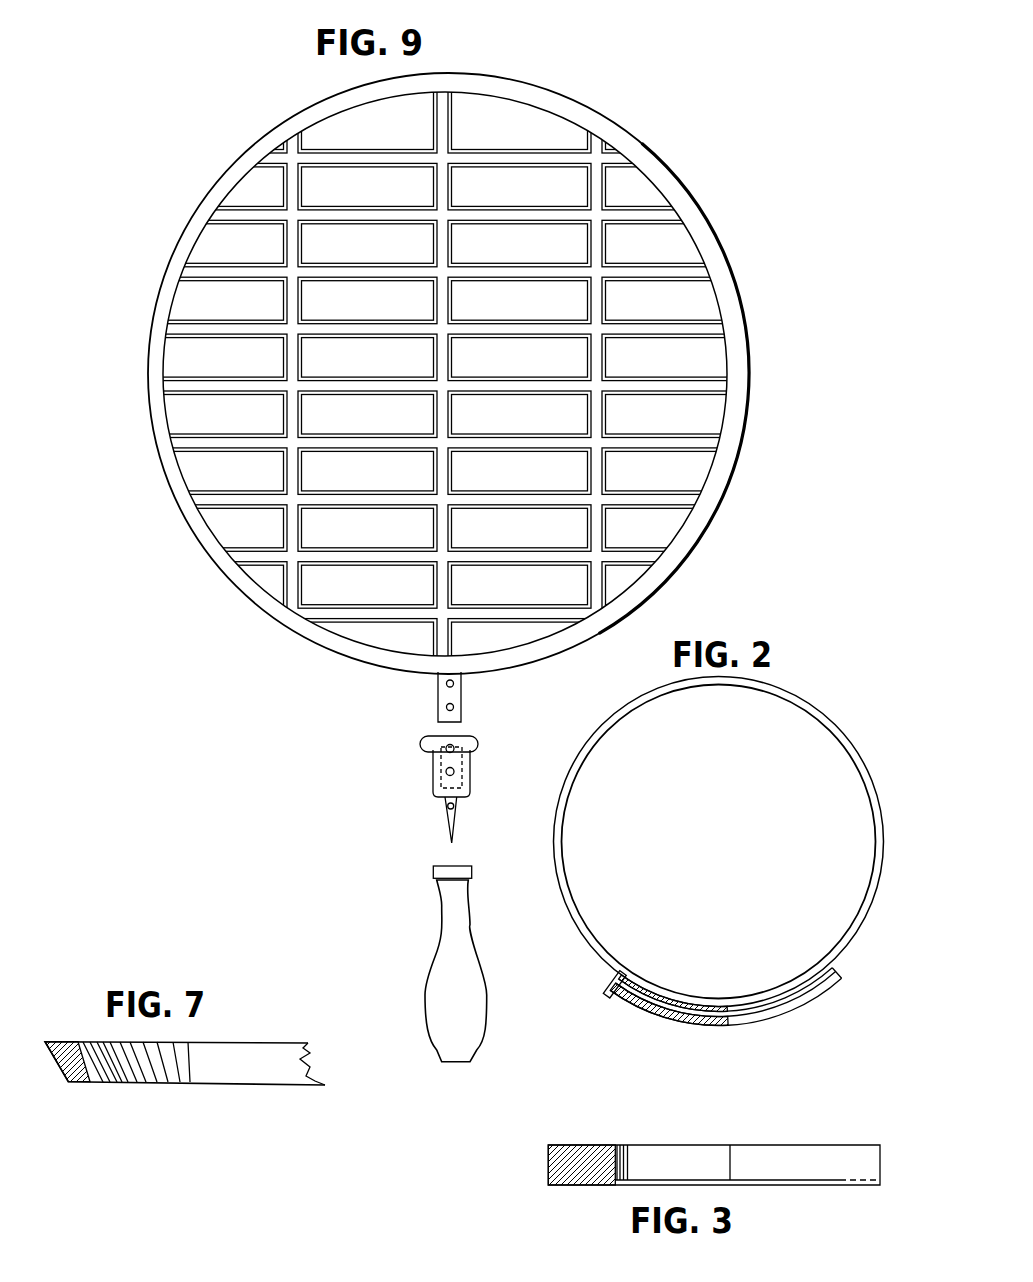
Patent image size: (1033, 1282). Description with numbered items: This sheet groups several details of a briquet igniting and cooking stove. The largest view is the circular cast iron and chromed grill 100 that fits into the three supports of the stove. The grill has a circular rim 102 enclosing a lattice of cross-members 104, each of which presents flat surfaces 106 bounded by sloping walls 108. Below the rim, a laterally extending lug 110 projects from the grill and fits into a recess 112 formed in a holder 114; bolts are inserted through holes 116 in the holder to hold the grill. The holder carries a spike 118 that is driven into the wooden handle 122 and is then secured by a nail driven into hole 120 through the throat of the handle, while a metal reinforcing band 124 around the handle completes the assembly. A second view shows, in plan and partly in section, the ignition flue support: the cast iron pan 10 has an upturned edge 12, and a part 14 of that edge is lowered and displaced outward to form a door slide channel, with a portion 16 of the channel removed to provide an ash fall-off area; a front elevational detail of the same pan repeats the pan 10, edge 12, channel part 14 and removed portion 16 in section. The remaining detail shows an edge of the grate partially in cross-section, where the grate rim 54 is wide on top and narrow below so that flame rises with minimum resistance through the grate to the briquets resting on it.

In FIG. 9, the grill 100 is at (783, 383).
In FIG. 9, the circular rim 102 is at (725, 453).
In FIG. 9, the cross-members 104 is at (606, 410).
In FIG. 9, the flat surfaces 106 is at (667, 440).
In FIG. 9, the sloping walls 108 is at (644, 447).
In FIG. 9, the laterally extending lug 110 is at (462, 700).
In FIG. 9, the recess 112 is at (440, 740).
In FIG. 9, the holder 114 is at (471, 758).
In FIG. 9, the holes 116 is at (445, 750).
In FIG. 9, the spike 118 is at (449, 825).
In FIG. 9, the hole 120 is at (457, 807).
In FIG. 9, the wooden handle 122 is at (467, 932).
In FIG. 9, the metal reinforcing band 124 is at (440, 872).
In FIG. 2, the cast iron pan 10 is at (708, 833).
In FIG. 3, the cast iron pan 10 is at (850, 1185).
In FIG. 2, the upturned edge 12 is at (863, 924).
In FIG. 3, the upturned edge 12 is at (880, 1152).
In FIG. 2, the part of edge 14 is at (803, 1003).
In FIG. 3, the part of edge 14 is at (738, 1182).
In FIG. 2, the portion of the channel 16 is at (617, 992).
In FIG. 3, the portion of the channel 16 is at (617, 1178).
In FIG. 7, the grate rim 54 is at (63, 1057).